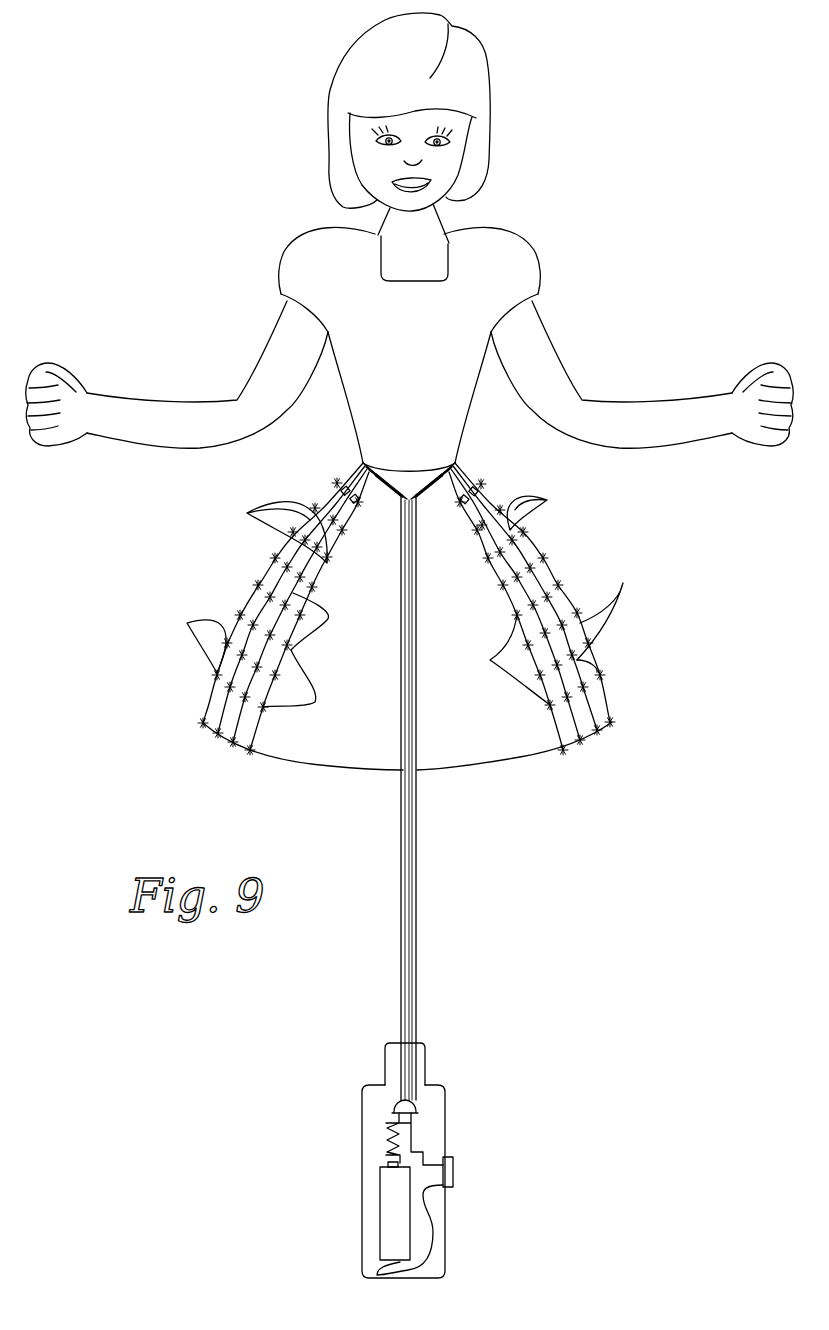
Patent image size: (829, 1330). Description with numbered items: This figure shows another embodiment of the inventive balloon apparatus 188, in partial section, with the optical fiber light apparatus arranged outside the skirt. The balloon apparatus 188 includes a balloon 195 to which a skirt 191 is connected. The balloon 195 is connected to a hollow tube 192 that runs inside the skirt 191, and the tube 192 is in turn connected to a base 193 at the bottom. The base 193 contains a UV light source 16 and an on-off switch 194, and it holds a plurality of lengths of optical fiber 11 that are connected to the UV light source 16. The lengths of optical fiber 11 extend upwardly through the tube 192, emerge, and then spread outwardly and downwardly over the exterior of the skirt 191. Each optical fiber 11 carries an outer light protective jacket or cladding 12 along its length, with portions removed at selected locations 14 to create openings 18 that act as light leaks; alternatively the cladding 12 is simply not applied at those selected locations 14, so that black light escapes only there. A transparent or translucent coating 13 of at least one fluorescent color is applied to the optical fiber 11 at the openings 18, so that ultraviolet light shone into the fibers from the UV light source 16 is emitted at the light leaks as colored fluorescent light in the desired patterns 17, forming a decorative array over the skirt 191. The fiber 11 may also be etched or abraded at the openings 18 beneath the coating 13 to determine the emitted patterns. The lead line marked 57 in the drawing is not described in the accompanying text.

The optical fiber 11 is at (333, 537).
The outer jacket or cladding 12 is at (247, 513).
The transparent or translucent coating 13 is at (337, 483).
The selected locations 14 is at (333, 483).
The UV light source 16 is at (390, 1212).
The patterns 17 is at (410, 614).
The openings 18 is at (340, 478).
The skirt hem 57 is at (360, 760).
The balloon apparatus 188 is at (698, 149).
The skirt 191 is at (413, 777).
The hollow tube 192 is at (413, 953).
The base 193 is at (405, 1155).
The on-off switch 194 is at (453, 1173).
The balloon 195 is at (503, 267).